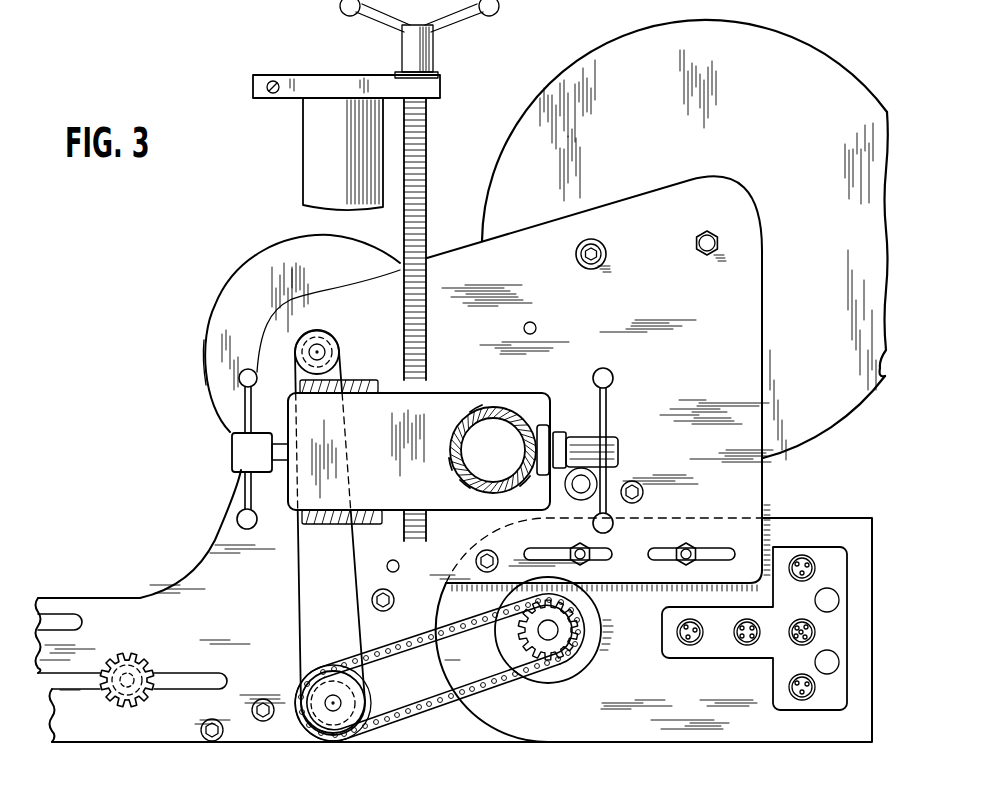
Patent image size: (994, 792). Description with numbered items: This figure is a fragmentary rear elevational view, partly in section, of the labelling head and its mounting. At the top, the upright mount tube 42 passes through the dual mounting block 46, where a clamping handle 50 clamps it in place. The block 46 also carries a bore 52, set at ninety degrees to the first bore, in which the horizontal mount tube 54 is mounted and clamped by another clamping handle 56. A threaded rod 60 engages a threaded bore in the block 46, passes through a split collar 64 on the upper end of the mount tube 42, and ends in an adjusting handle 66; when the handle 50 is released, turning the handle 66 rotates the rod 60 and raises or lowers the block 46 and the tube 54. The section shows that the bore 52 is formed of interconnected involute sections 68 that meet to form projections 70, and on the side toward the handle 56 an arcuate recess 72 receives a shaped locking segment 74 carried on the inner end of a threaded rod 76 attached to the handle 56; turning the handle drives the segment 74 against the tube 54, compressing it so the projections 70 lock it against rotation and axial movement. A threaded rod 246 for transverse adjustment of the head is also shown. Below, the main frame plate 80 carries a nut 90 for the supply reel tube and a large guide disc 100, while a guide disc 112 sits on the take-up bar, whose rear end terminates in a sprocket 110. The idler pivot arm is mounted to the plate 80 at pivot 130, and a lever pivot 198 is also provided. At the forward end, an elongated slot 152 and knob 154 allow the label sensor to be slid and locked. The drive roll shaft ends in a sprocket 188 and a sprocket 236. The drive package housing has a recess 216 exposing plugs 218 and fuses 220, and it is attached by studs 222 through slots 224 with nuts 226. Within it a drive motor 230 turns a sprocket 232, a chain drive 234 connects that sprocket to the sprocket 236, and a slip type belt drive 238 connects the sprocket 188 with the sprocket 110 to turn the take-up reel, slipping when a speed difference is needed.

The upright mount tube 42 is at (313, 134).
The dual mounting block 46 is at (393, 438).
The clamping handle 50 is at (229, 460).
The bore 52 is at (478, 484).
The horizontal mount tube 54 is at (509, 416).
The clamping handle 56 is at (602, 408).
The threaded rod 60 is at (428, 164).
The split collar 64 is at (320, 82).
The adjusting handle 66 is at (418, 56).
The involute sections 68 is at (454, 460).
The projections 70 is at (498, 408).
The arcuate recess 72 is at (543, 429).
The locking segment 74 is at (558, 440).
The threaded rod 76 is at (575, 450).
The main frame plate 80 is at (187, 578).
The nut 90 is at (705, 240).
The guide disc 100 is at (603, 55).
The sprocket 110 is at (325, 338).
The guide disc 112 is at (214, 318).
The pivot 130 is at (602, 254).
The elongated slot 152 is at (199, 678).
The knob 154 is at (134, 659).
The sprocket 188 is at (324, 713).
The pivot 198 is at (390, 592).
The recess 216 is at (711, 658).
The plugs 218 is at (795, 644).
The fuses 220 is at (838, 608).
The studs 222 is at (668, 562).
The slots 224 is at (605, 550).
The nuts 226 is at (575, 546).
The drive motor 230 is at (574, 669).
The sprocket 232 is at (530, 633).
The chain drive 234 is at (446, 708).
The sprocket 236 is at (331, 730).
The slip type belt drive 238 is at (297, 612).
The threaded rod 246 is at (588, 482).